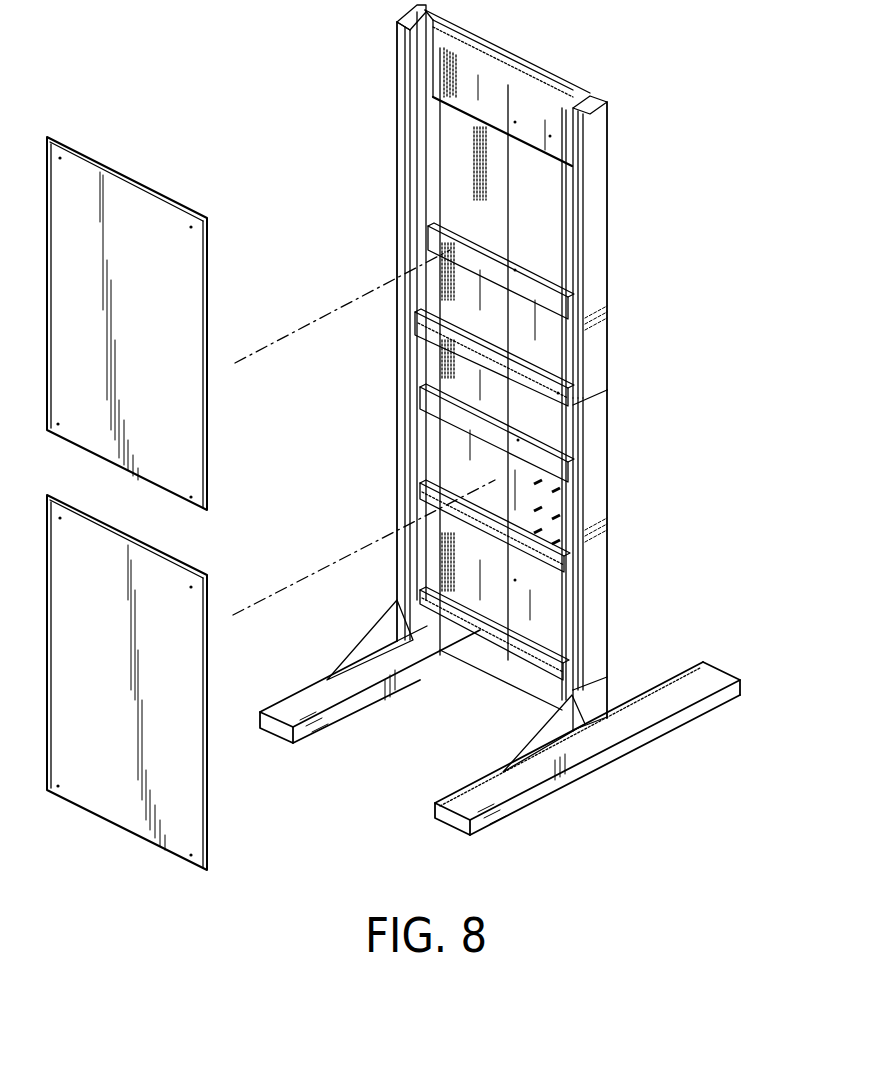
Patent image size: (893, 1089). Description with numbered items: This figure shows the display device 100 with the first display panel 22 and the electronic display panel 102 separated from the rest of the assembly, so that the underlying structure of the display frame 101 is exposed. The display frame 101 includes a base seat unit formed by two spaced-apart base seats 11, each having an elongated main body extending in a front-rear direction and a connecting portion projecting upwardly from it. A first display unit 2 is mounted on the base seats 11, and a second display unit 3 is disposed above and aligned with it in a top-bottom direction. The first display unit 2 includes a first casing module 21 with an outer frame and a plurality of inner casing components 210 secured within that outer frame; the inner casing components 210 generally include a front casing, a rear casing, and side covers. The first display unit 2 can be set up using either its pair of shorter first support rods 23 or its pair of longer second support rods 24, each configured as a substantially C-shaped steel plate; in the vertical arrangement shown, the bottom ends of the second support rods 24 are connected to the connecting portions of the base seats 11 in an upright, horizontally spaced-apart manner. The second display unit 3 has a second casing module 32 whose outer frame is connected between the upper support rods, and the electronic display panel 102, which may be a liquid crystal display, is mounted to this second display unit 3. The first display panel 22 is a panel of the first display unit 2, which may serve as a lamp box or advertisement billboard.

The display device 100 is at (640, 88).
The display frame 101 is at (640, 273).
The electronic display panel 102 is at (135, 202).
The first display unit 2 is at (600, 442).
The second display unit 3 is at (600, 182).
The base seat 11 is at (330, 728).
The first casing module 21 is at (575, 504).
The inner casing components 210 is at (538, 612).
The first display panel 22 is at (117, 808).
The first support rods 23 is at (482, 401).
The second support rods 24 is at (397, 565).
The second casing module 32 is at (572, 55).